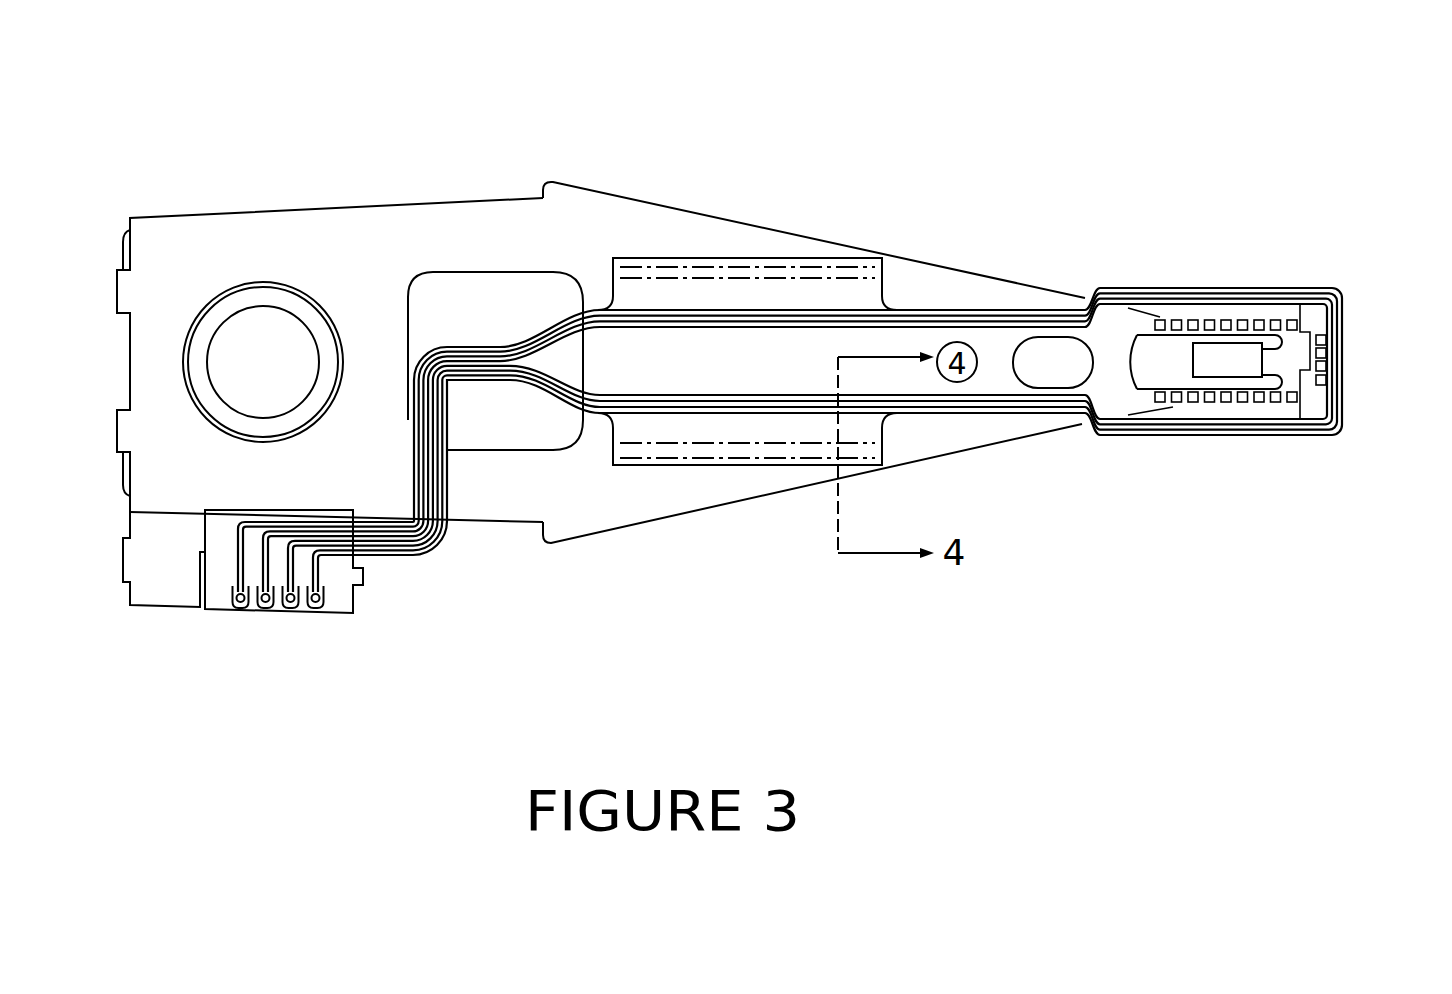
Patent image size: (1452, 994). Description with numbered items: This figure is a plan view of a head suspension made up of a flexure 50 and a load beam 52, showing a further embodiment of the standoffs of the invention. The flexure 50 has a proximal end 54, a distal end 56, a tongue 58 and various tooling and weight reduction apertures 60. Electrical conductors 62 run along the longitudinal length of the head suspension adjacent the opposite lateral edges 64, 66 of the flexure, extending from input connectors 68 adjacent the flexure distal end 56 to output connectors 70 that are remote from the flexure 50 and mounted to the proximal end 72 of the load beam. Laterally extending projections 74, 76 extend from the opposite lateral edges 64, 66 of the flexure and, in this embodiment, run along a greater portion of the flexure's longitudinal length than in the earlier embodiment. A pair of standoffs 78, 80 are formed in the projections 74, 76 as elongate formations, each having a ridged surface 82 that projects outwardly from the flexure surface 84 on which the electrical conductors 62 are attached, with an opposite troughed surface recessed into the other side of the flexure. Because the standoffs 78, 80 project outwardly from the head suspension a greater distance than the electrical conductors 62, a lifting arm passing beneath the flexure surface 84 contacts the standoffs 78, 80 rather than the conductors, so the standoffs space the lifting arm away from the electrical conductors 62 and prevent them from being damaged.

The flexure 50 is at (922, 300).
The load beam 52 is at (663, 165).
The proximal end 54 is at (590, 372).
The distal end 56 is at (1340, 321).
The tongue 58 is at (1232, 352).
The tooling and weight reduction apertures 60 is at (973, 340).
The electrical conductors 62 is at (423, 358).
The lateral edge 64 is at (901, 307).
The lateral edge 66 is at (972, 412).
The input connectors 68 is at (1329, 380).
The output connectors 70 is at (240, 608).
The proximal end of the load beam 72 is at (186, 232).
The laterally extending projection 74 is at (633, 292).
The laterally extending projection 76 is at (673, 427).
The standoff 78 is at (802, 273).
The standoff 80 is at (622, 453).
The ridged surface 82 is at (742, 452).
The flexure surface 84 is at (660, 367).